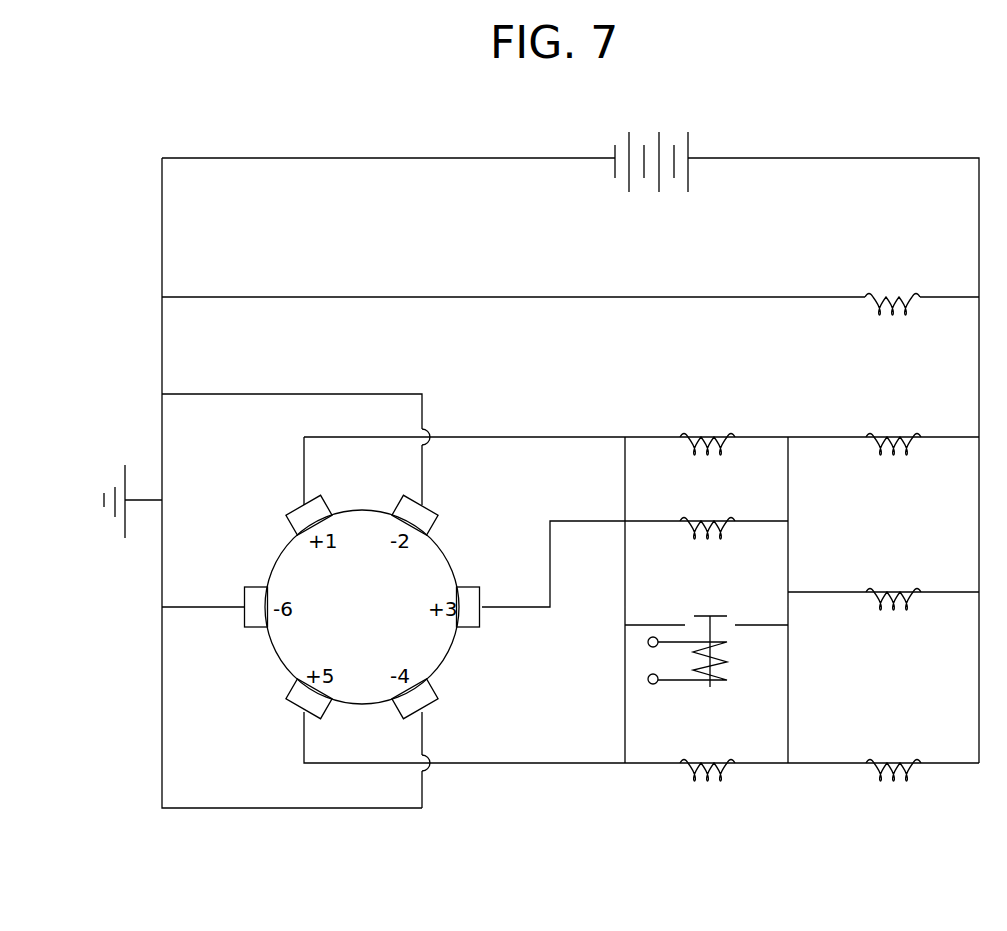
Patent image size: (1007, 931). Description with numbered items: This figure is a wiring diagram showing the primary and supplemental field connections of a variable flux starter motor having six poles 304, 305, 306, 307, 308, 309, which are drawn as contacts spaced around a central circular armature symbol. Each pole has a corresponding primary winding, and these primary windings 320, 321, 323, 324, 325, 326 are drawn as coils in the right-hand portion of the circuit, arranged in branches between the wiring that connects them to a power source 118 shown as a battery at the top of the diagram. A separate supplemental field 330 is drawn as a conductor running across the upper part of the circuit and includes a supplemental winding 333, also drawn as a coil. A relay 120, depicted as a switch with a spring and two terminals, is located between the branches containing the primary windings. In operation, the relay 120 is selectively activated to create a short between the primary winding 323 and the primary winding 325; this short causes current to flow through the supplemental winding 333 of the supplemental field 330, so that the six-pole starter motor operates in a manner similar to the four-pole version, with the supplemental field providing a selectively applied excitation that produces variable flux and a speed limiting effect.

The power source 118 is at (613, 140).
The relay 120 is at (748, 674).
The pole 304 is at (295, 512).
The pole 305 is at (432, 511).
The pole 306 is at (482, 626).
The pole 307 is at (440, 700).
The pole 308 is at (295, 700).
The pole 309 is at (250, 628).
The primary winding 320 is at (893, 425).
The primary winding 321 is at (707, 425).
The primary winding 323 is at (707, 511).
The primary winding 324 is at (893, 583).
The primary winding 325 is at (710, 754).
The primary winding 326 is at (893, 754).
The supplemental field 330 is at (495, 318).
The supplemental winding 333 is at (878, 314).